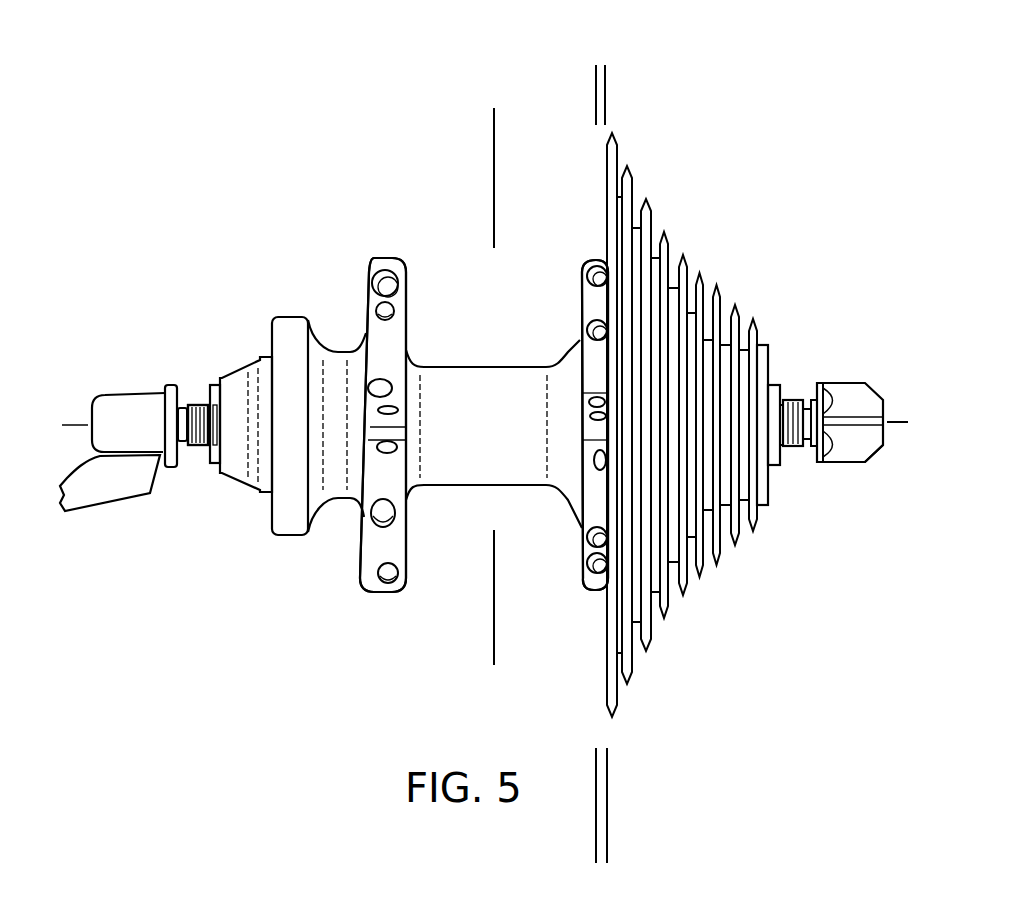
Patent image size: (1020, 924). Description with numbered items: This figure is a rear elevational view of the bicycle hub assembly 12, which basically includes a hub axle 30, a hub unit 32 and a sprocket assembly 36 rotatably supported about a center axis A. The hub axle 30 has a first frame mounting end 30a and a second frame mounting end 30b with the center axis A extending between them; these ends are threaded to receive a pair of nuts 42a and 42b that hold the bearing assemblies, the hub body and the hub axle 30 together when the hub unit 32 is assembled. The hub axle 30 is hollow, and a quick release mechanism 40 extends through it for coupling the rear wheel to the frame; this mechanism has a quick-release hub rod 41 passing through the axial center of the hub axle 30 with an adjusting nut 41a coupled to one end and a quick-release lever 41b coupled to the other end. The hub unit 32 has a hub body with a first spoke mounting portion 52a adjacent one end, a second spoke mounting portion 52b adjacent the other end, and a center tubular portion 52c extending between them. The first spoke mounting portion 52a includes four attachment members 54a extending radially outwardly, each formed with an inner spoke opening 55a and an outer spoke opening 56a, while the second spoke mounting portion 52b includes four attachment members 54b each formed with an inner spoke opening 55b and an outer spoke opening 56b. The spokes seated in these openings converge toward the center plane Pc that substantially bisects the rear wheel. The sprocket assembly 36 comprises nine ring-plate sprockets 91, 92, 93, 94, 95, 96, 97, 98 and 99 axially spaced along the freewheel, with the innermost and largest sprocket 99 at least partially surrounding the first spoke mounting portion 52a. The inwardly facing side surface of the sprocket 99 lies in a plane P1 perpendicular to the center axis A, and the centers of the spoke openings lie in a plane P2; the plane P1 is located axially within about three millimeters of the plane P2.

The bicycle hub assembly 12 is at (561, 88).
The plane of the sprocket side surface P1 is at (606, 80).
The plane of the spoke opening centers P2 is at (596, 88).
The center plane Pc is at (492, 162).
The hub axle 30 is at (195, 455).
The first frame mounting end 30a is at (788, 400).
The second frame mounting end 30b is at (197, 403).
The hub unit 32 is at (450, 495).
The sprocket assembly 36 is at (710, 410).
The quick release mechanism 40 is at (146, 385).
The quick-release hub rod 41 is at (812, 392).
The adjusting nut 41a is at (848, 462).
The quick-release lever 41b is at (124, 505).
The nut 42a is at (773, 463).
The nut 42b is at (213, 466).
The first spoke mounting portion 52a is at (578, 264).
The second spoke mounting portion 52b is at (410, 262).
The center tubular portion 52c is at (482, 363).
The attachment members 54a is at (584, 426).
The attachment members 54b is at (366, 263).
The inner spoke openings 55a is at (597, 330).
The inner spoke openings 55b is at (398, 315).
The outer spoke openings 56a is at (584, 278).
The outer spoke openings 56b is at (396, 290).
The sprocket 91 is at (756, 328).
The sprocket 92 is at (737, 312).
The sprocket 93 is at (718, 292).
The sprocket 94 is at (703, 278).
The sprocket 95 is at (686, 257).
The sprocket 96 is at (667, 232).
The sprocket 97 is at (647, 200).
The sprocket 98 is at (630, 170).
The largest sprocket 99 is at (613, 139).
The center axis A is at (893, 420).